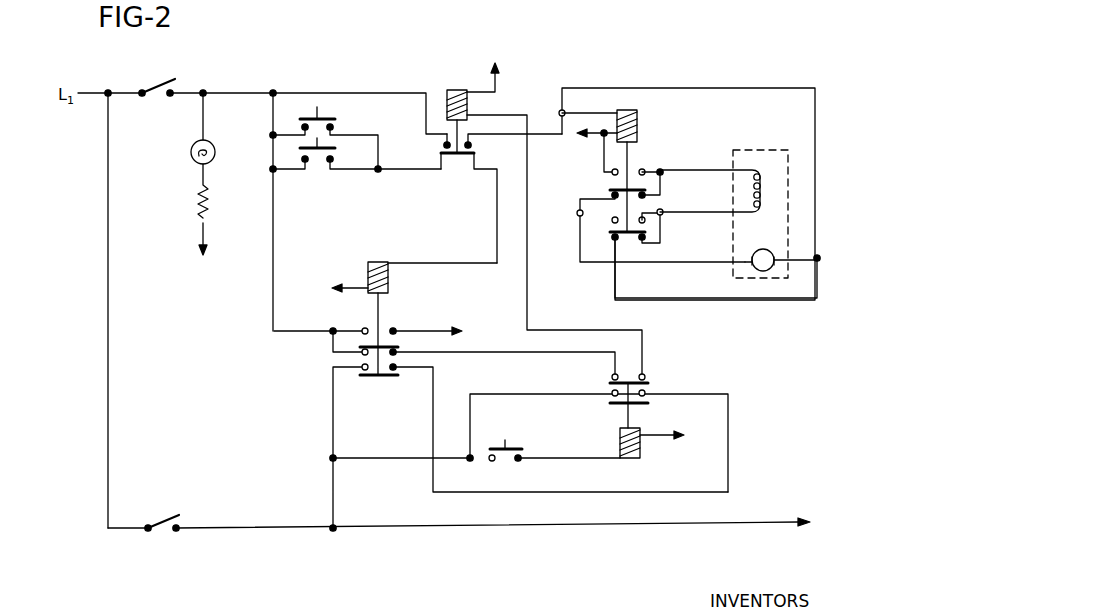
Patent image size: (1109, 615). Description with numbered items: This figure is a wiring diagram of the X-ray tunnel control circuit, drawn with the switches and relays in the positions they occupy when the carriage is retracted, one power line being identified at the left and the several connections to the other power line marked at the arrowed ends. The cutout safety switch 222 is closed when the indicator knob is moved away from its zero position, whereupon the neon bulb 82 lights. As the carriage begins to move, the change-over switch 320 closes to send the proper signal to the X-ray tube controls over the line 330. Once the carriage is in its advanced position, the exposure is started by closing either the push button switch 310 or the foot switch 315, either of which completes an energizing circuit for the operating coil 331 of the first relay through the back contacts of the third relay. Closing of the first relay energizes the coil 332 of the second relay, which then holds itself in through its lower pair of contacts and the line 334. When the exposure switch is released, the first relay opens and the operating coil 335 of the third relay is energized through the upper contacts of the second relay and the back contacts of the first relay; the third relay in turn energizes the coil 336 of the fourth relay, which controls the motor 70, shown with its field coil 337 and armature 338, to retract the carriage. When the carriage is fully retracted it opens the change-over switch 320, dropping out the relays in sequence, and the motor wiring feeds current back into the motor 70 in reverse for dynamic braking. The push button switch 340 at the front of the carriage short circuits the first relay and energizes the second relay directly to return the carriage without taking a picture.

The cutout safety switch 222 is at (155, 85).
The neon bulb 82 is at (191, 151).
The push button switch 310 is at (312, 116).
The foot switch 315 is at (314, 164).
The operating coil of relay R3 335 is at (453, 90).
The coil of relay R4 336 is at (637, 127).
The motor 70 is at (764, 149).
The field coil 337 is at (763, 194).
The armature 338 is at (766, 272).
The operating coil of relay R1 331 is at (368, 275).
The coil of relay R2 332 is at (633, 458).
The push button switch 340 is at (515, 441).
The line 334 is at (390, 460).
The change-over switch 320 is at (160, 532).
The line 330 is at (508, 526).